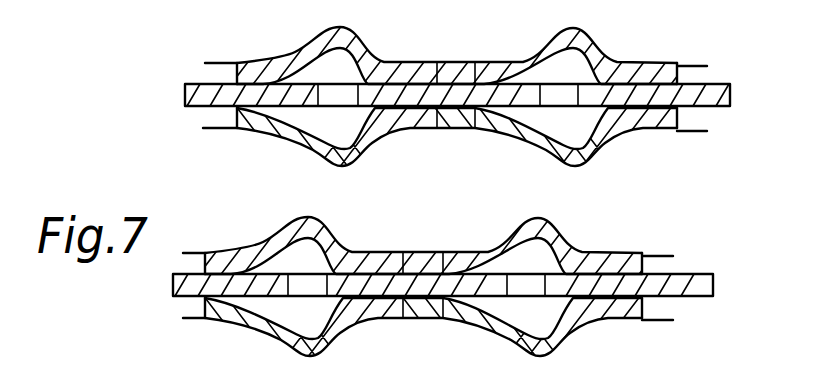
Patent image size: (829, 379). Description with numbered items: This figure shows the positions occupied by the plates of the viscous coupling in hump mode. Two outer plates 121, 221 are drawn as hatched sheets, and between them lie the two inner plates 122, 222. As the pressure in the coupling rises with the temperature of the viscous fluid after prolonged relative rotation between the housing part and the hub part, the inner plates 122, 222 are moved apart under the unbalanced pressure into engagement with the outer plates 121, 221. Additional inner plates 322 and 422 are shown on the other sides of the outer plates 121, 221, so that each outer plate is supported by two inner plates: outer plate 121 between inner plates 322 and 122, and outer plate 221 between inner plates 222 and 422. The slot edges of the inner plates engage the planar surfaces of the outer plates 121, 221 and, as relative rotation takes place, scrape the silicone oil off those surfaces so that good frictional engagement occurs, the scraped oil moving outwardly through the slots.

The inner plate 322 is at (648, 60).
The outer plate 121 is at (722, 97).
The inner plate 122 is at (662, 129).
The inner plate 222 is at (628, 257).
The outer plate 221 is at (703, 287).
The inner plate 422 is at (622, 319).